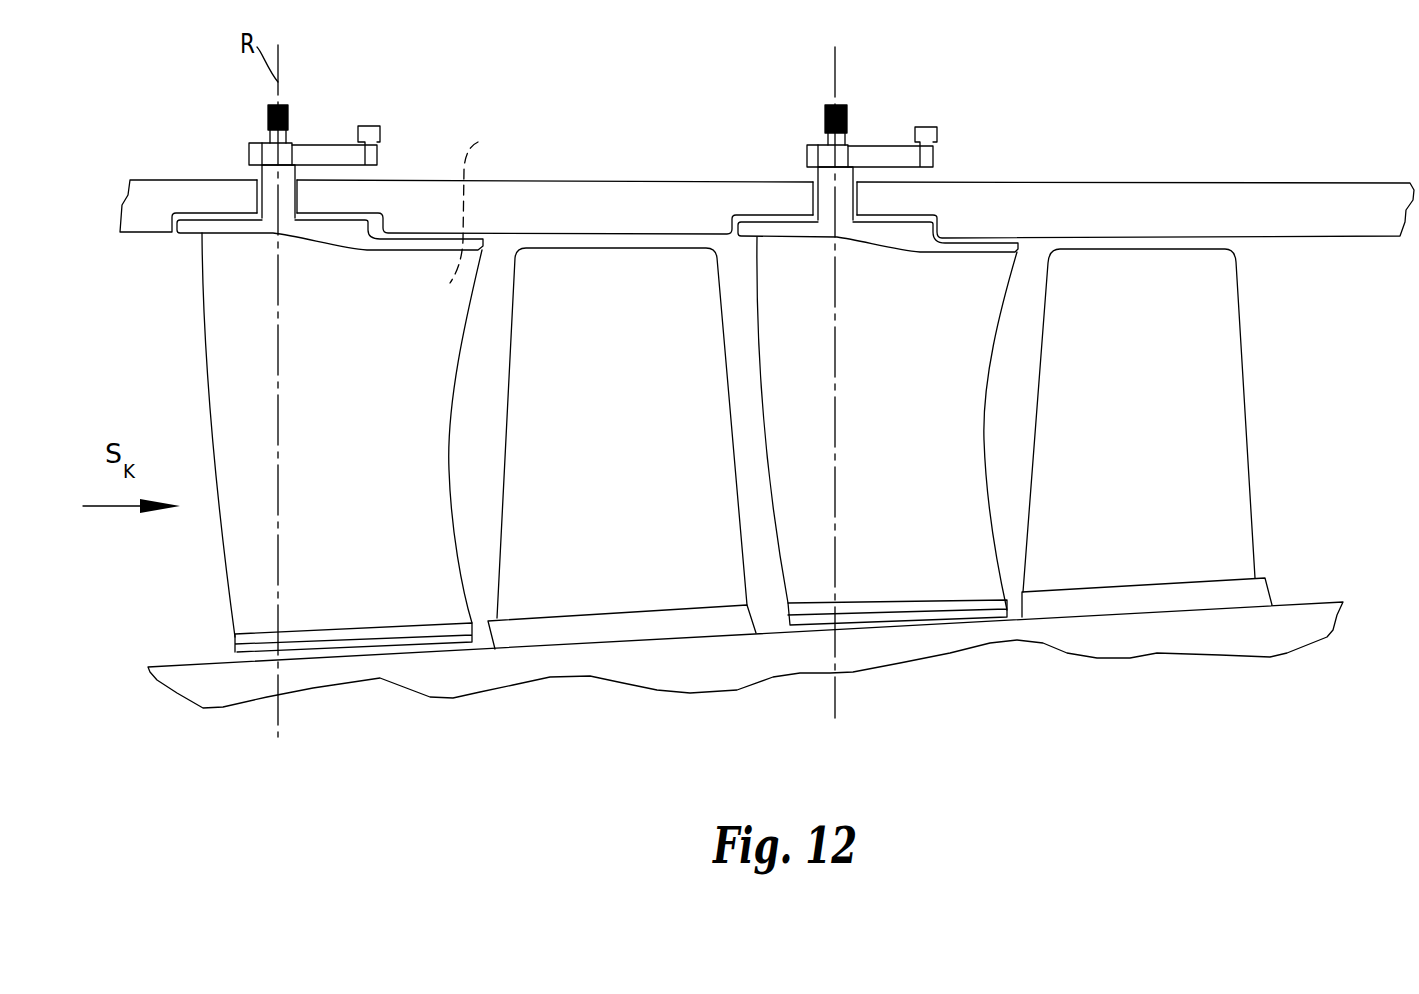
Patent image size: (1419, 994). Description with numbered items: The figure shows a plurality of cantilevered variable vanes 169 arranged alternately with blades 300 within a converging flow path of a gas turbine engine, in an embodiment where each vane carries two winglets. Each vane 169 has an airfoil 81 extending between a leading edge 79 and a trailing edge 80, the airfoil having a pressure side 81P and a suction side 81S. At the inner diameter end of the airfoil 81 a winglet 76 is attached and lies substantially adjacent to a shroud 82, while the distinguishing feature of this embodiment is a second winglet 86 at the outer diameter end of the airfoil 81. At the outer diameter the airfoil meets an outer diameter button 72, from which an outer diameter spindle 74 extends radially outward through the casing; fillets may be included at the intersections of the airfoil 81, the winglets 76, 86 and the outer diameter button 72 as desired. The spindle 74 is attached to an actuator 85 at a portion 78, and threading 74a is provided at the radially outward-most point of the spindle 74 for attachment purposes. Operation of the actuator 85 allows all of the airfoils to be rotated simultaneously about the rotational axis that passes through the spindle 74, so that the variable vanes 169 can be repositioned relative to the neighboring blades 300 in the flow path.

The outer diameter button 72 is at (185, 237).
The outer diameter spindle 74 is at (266, 200).
The threading 74a is at (268, 122).
The winglet 76 is at (352, 636).
The portion 78 is at (287, 140).
The leading edge 79 is at (202, 333).
The trailing edge 80 is at (457, 347).
The airfoil 81 is at (325, 443).
The pressure side 81P is at (425, 588).
The suction side 81S is at (482, 203).
The shroud 82 is at (243, 657).
The actuator 85 is at (381, 153).
The second winglet 86 is at (368, 233).
The cantilevered variable vane 169 is at (325, 419).
The blade 300 is at (625, 570).